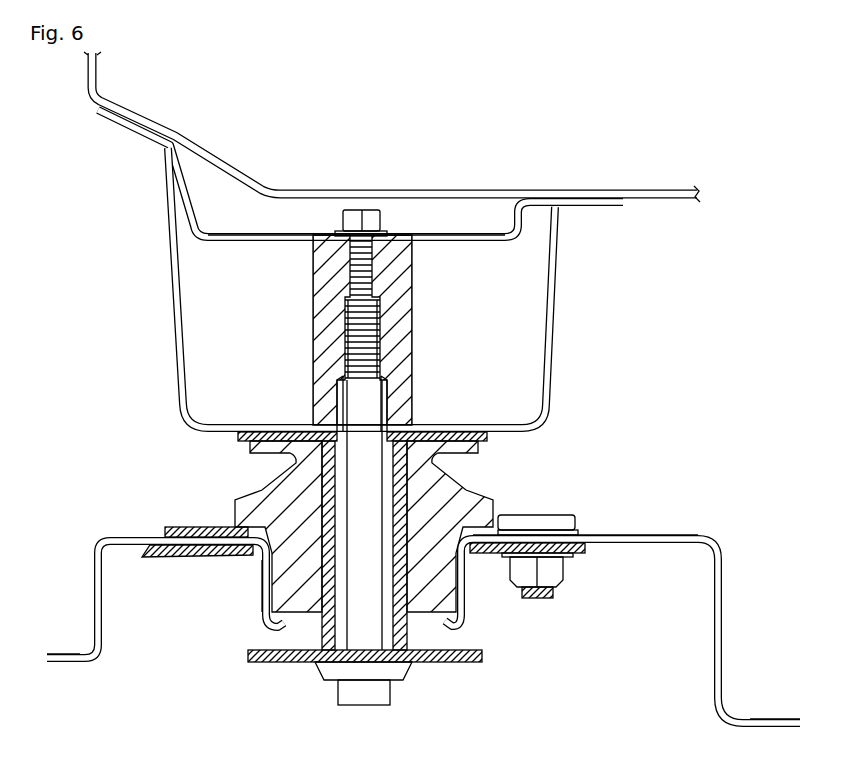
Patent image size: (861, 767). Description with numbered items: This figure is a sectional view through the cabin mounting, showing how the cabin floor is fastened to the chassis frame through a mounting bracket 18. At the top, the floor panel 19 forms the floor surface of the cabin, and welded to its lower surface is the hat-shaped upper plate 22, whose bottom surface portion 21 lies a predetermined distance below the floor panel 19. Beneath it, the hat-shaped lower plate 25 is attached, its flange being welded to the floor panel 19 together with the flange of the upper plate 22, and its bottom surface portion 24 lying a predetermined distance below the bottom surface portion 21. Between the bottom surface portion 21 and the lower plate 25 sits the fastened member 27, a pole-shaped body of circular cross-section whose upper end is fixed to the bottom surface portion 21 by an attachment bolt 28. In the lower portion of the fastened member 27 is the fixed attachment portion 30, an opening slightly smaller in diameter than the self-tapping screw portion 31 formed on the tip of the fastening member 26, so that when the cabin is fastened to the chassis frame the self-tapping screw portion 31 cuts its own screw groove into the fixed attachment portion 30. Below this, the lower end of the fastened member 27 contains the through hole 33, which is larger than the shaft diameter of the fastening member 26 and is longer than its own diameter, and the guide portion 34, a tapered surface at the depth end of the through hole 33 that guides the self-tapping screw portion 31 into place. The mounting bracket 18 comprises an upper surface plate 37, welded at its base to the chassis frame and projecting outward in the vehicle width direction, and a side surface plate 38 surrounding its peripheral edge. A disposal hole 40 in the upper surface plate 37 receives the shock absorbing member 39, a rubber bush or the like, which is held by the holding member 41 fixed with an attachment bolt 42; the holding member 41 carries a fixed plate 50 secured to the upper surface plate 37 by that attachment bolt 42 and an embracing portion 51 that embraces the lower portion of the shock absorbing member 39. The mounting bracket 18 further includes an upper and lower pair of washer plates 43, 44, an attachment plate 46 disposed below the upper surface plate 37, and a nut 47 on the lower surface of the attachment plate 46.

The mounting bracket 18 is at (683, 519).
The floor panel 19 is at (667, 189).
The bottom surface portion 21 is at (247, 232).
The upper plate 22 is at (491, 247).
The bottom surface portion 24 is at (487, 428).
The lower plate 25 is at (563, 392).
The fastening member 26 is at (357, 650).
The fastened member 27 is at (313, 297).
The attachment bolt 28 is at (362, 209).
The fixed attachment portion 30 is at (345, 330).
The self-tapping screw portion 31 is at (378, 328).
The through hole 33 is at (374, 402).
The guide portion 34 is at (342, 384).
The upper surface plate 37 is at (142, 537).
The side surface plate 38 is at (93, 599).
The shock absorbing member 39 is at (263, 491).
The disposal hole 40 is at (250, 500).
The holding member 41 is at (479, 596).
The attachment bolt 42 is at (545, 515).
The washer plate 43 is at (457, 462).
The washer plate 44 is at (455, 663).
The attachment plate 46 is at (192, 556).
The nut 47 is at (565, 571).
The fixed plate 50 is at (190, 527).
The embracing portion 51 is at (258, 600).